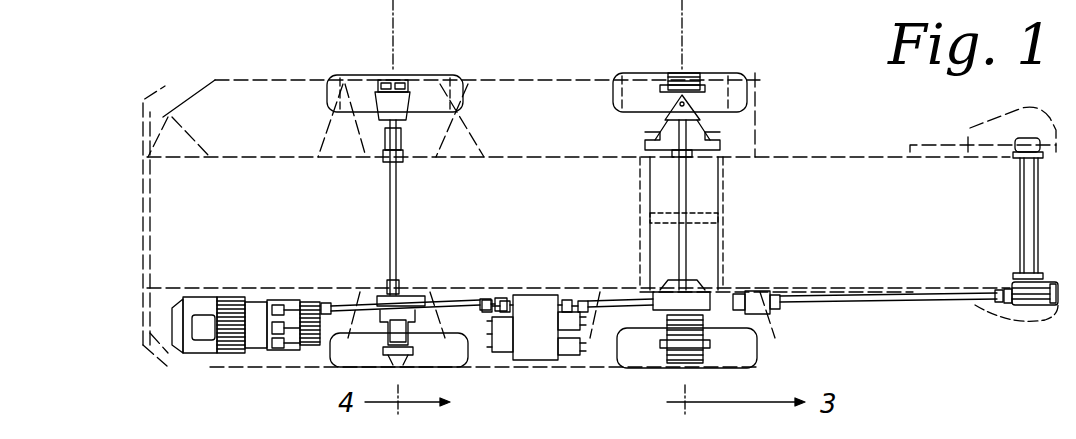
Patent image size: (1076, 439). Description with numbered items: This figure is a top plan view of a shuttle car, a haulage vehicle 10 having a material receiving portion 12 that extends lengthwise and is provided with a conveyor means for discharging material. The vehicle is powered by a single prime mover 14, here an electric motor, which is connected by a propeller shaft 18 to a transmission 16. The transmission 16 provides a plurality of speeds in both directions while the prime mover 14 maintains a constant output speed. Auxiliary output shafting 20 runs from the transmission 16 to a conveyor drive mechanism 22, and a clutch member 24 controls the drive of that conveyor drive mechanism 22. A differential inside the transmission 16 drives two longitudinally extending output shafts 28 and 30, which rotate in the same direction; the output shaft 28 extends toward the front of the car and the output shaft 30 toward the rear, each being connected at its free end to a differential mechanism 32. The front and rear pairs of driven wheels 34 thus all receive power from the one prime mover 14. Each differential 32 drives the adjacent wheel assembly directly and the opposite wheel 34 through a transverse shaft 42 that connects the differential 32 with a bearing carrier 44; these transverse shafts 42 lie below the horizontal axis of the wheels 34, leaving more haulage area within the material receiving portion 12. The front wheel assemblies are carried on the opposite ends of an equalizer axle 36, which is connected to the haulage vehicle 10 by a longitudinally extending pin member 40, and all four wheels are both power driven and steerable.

The haulage vehicle 10 is at (787, 139).
The material receiving portion 12 is at (540, 224).
The prime mover 14 is at (205, 353).
The transmission 16 is at (540, 296).
The propeller shaft 18 is at (363, 300).
The auxiliary output shafting 20 is at (718, 300).
The conveyor drive mechanism 22 is at (1035, 305).
The clutch member 24 is at (757, 290).
The output shaft 28 is at (604, 316).
The output shaft 30 is at (478, 313).
The differential mechanism 32 is at (410, 292).
The driven wheels 34 is at (422, 75).
The equalizer axle 36 is at (712, 182).
The pin member 40 is at (700, 217).
The transverse shaft 42 is at (393, 211).
The bearing carrier 44 is at (390, 137).